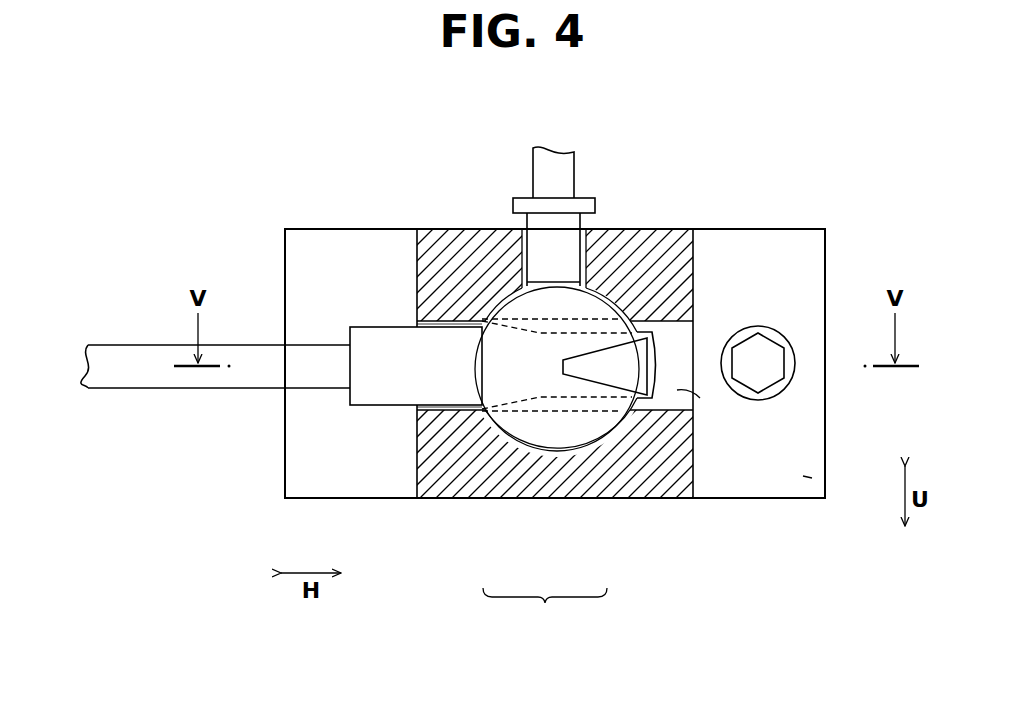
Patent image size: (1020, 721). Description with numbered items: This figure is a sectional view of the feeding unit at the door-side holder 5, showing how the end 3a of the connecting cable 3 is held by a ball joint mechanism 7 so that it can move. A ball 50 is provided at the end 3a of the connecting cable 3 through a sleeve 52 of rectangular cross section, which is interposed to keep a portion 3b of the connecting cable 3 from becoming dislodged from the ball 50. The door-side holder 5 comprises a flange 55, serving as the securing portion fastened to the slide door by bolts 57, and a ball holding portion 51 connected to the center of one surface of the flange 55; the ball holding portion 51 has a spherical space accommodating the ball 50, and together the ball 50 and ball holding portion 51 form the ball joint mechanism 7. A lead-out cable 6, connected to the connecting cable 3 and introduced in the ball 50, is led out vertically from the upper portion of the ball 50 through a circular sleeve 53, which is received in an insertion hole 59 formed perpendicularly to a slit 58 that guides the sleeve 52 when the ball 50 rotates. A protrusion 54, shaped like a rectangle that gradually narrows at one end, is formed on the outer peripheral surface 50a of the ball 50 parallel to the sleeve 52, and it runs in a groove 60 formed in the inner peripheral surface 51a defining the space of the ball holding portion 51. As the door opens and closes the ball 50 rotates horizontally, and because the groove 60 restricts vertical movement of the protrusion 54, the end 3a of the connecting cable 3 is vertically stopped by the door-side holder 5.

The connecting cable 3 is at (215, 419).
The end of the connecting cable 3a is at (517, 379).
The portion of the connecting cable 3b is at (128, 378).
The door-side holder 5 is at (814, 227).
The lead-out cable 6 is at (565, 173).
The ball joint mechanism 7 is at (545, 609).
The ball 50 is at (517, 379).
The outer peripheral surface 50a is at (497, 303).
The ball holding portion 51 is at (500, 493).
The inner peripheral surface 51a is at (640, 402).
The sleeve 52 is at (387, 347).
The sleeve 53 is at (573, 245).
The protrusion 54 is at (608, 373).
The flange 55 is at (812, 478).
The bolt 57 is at (779, 366).
The slit 58 is at (700, 398).
The insertion hole 59 is at (510, 268).
The groove 60 is at (658, 348).